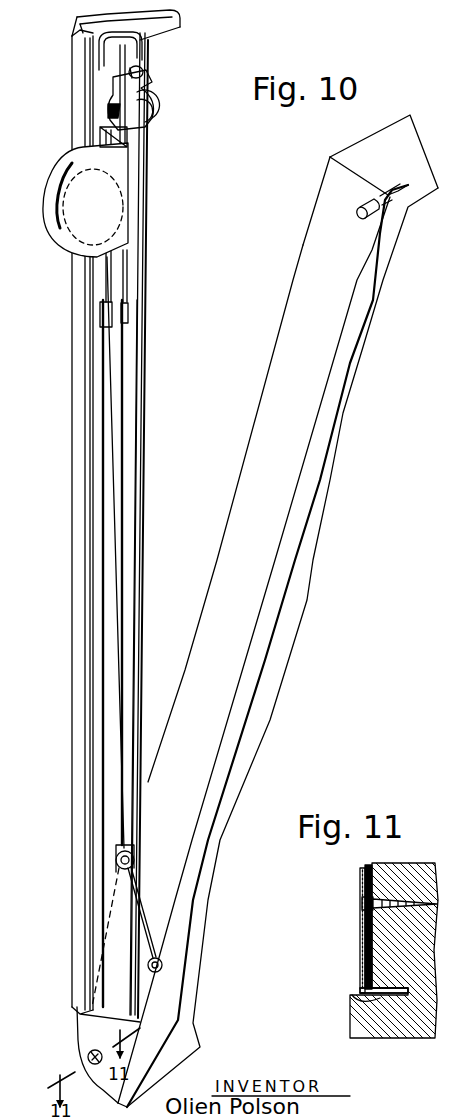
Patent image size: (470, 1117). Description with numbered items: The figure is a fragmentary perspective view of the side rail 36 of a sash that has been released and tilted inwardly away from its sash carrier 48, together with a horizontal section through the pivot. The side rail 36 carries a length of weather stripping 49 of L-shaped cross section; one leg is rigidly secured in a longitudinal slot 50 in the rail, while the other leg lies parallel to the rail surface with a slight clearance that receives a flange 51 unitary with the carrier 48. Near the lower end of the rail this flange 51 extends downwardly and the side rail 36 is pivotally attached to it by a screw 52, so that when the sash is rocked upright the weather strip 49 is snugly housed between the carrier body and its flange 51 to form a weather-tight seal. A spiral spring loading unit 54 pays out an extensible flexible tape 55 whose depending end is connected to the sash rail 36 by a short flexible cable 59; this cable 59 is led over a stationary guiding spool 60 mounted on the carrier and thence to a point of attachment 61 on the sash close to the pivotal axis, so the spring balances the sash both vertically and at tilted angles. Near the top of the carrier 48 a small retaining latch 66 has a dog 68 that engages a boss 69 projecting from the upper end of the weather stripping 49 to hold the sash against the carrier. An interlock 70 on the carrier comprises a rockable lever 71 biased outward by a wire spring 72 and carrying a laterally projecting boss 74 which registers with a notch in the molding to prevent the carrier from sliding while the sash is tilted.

In FIG. 10, the side rail 36 is at (310, 583).
In FIG. 11, the side rail 36 is at (405, 870).
In FIG. 10, the sash carrier 48 is at (88, 590).
In FIG. 10, the weather stripping 49 is at (232, 548).
In FIG. 11, the weather stripping 49 is at (360, 973).
In FIG. 10, the longitudinal slot 50 is at (408, 185).
In FIG. 11, the longitudinal slot 50 is at (354, 996).
In FIG. 10, the flange 51 is at (145, 510).
In FIG. 11, the flange 51 is at (366, 933).
In FIG. 10, the screw 52 is at (88, 1055).
In FIG. 11, the screw 52 is at (361, 900).
In FIG. 10, the spiral spring loading unit 54 is at (47, 217).
In FIG. 10, the flexible tape 55 is at (118, 452).
In FIG. 10, the flexible cable 59 is at (145, 918).
In FIG. 10, the guiding spool 60 is at (133, 848).
In FIG. 10, the point of attachment 61 is at (162, 967).
In FIG. 10, the retaining latch 66 is at (180, 28).
In FIG. 10, the dog 68 is at (153, 47).
In FIG. 10, the boss 69 is at (363, 217).
In FIG. 10, the interlock 70 is at (155, 125).
In FIG. 10, the rockable lever 71 is at (157, 107).
In FIG. 10, the wire spring 72 is at (98, 213).
In FIG. 10, the boss 74 is at (148, 77).